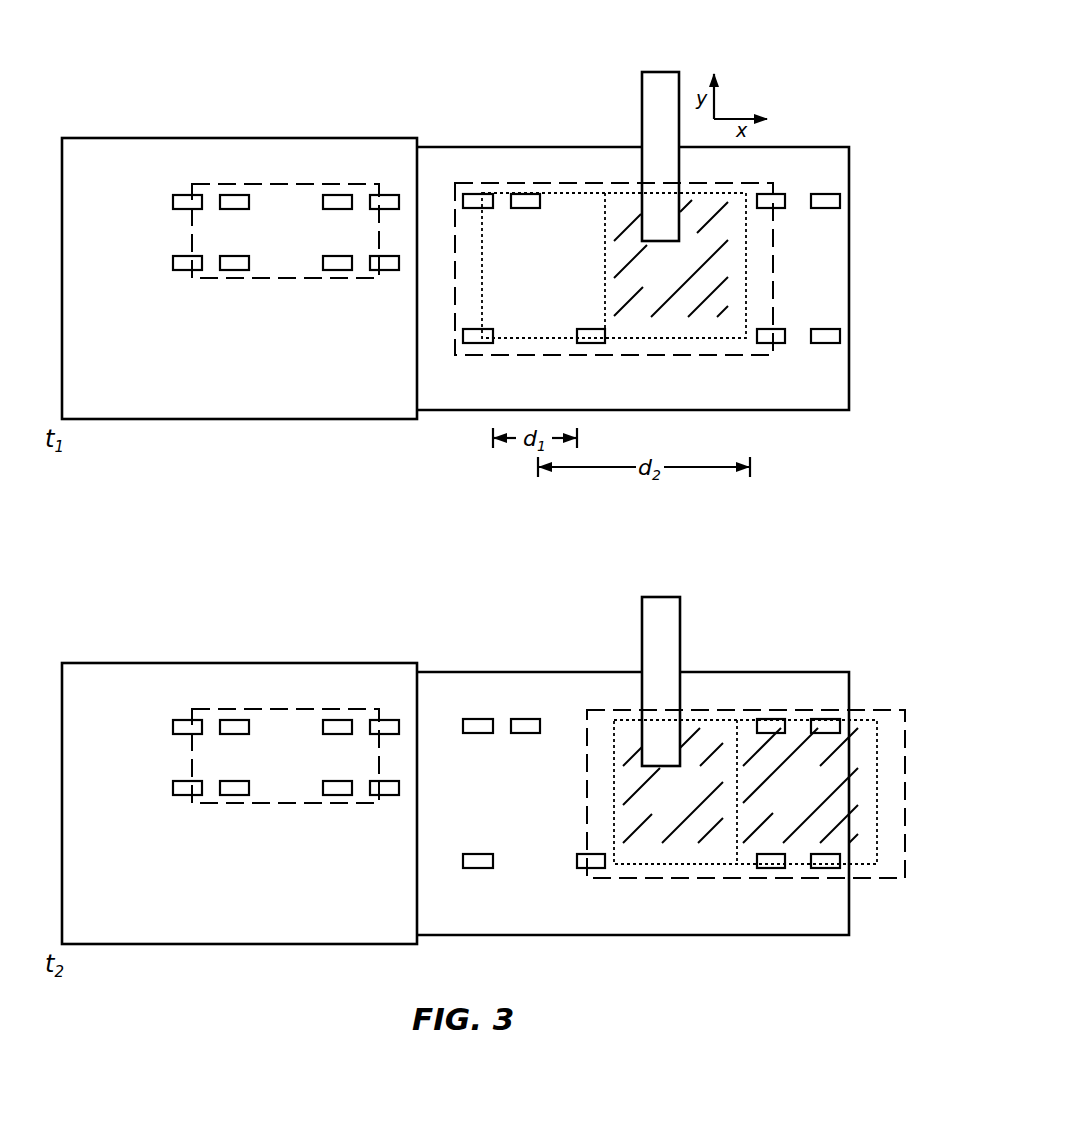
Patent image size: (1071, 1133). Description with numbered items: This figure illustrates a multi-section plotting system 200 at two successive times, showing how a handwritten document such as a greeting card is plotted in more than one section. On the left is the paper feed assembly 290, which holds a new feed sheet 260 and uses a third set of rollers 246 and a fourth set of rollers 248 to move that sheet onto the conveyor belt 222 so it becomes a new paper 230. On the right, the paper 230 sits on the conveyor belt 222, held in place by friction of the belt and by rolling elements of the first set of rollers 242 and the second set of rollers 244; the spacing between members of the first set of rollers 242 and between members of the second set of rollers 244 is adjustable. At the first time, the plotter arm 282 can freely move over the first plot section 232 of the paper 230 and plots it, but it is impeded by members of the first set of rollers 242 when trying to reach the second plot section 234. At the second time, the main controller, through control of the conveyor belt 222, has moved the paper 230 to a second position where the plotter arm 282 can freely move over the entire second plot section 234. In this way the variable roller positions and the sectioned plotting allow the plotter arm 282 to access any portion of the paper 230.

The alignment system 200 is at (834, 61).
The conveyor belt 222 is at (793, 147).
The paper 230 is at (727, 182).
The first plot section 232 is at (736, 521).
The second plot section 234 is at (623, 546).
The first set of rollers 242 is at (445, 336).
The second set of rollers 244 is at (445, 202).
The third set of rollers 246 is at (163, 263).
The fourth set of rollers 248 is at (163, 202).
The new feed sheet 260 is at (263, 182).
The plotter arm 282 is at (662, 72).
The paper feed assembly 290 is at (98, 137).